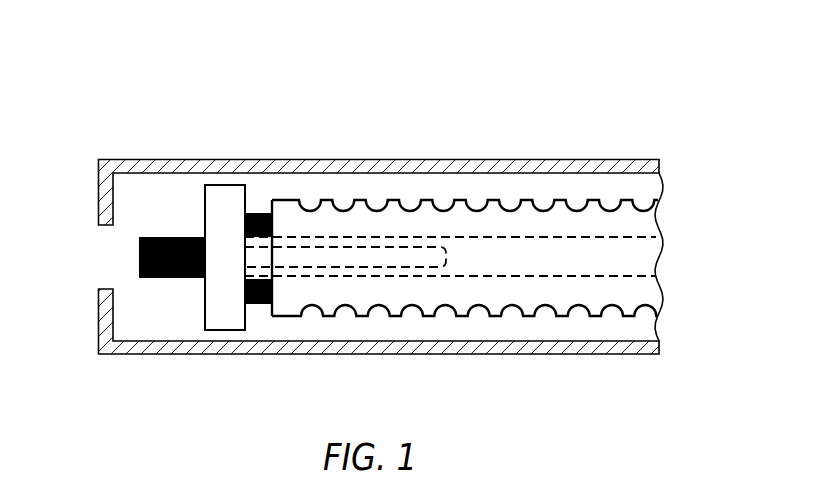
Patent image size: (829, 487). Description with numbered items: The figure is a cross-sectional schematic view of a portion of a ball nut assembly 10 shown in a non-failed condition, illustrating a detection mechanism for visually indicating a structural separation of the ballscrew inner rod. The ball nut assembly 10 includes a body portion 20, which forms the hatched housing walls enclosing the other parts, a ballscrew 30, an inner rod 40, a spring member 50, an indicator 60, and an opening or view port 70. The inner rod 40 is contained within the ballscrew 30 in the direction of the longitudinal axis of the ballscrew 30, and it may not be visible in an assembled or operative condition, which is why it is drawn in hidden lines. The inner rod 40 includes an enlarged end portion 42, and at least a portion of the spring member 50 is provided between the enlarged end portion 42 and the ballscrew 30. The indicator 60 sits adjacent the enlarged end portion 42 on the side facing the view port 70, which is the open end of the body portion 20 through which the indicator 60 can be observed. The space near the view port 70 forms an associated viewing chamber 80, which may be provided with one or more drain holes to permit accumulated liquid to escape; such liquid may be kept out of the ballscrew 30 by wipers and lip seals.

The ball nut assembly 10 is at (57, 67).
The body portion 20 is at (620, 159).
The ballscrew 30 is at (633, 307).
The inner rod 40 is at (641, 236).
The enlarged end portion 42 is at (224, 330).
The spring member 50 is at (258, 305).
The indicator 60 is at (170, 278).
The view port 70 is at (95, 264).
The viewing chamber 80 is at (166, 217).